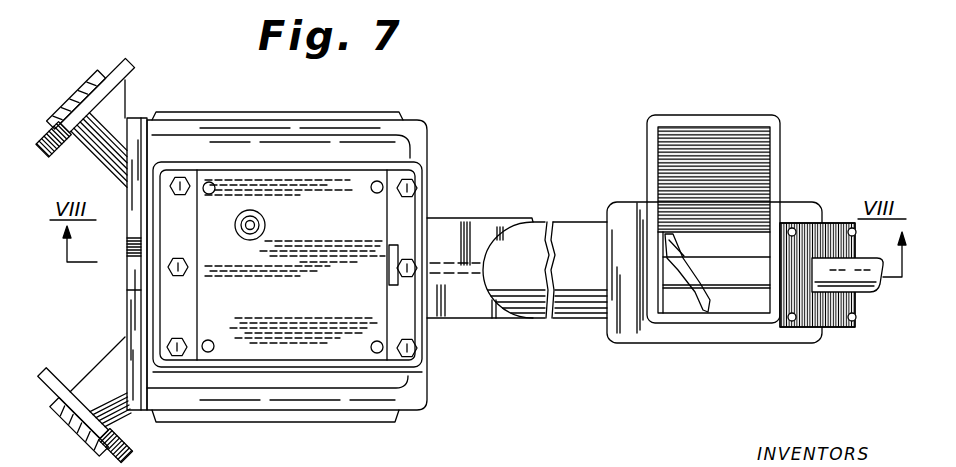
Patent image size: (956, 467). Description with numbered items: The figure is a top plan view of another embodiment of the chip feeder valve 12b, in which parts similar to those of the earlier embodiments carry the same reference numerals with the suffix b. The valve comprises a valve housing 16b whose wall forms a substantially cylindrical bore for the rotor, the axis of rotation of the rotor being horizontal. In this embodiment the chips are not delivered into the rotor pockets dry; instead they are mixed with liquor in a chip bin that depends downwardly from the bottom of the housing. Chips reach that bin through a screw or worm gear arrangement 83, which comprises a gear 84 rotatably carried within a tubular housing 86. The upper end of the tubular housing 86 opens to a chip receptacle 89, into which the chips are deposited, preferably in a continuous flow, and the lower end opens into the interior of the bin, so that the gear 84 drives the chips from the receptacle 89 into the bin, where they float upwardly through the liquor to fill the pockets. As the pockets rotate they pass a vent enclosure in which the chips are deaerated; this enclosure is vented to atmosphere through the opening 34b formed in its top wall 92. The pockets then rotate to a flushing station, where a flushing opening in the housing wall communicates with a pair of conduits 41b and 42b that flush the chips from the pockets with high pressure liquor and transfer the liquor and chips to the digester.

The conduit 42b is at (118, 110).
The conduit 41b is at (130, 427).
The chip feeder valve 12b is at (444, 149).
The valve housing 16b is at (436, 181).
The opening 34b is at (258, 216).
The top wall 92 is at (352, 225).
The screw or worm gear arrangement 83 is at (583, 216).
The tubular housing 86 is at (580, 300).
The gear 84 is at (680, 250).
The chip receptacle 89 is at (781, 121).